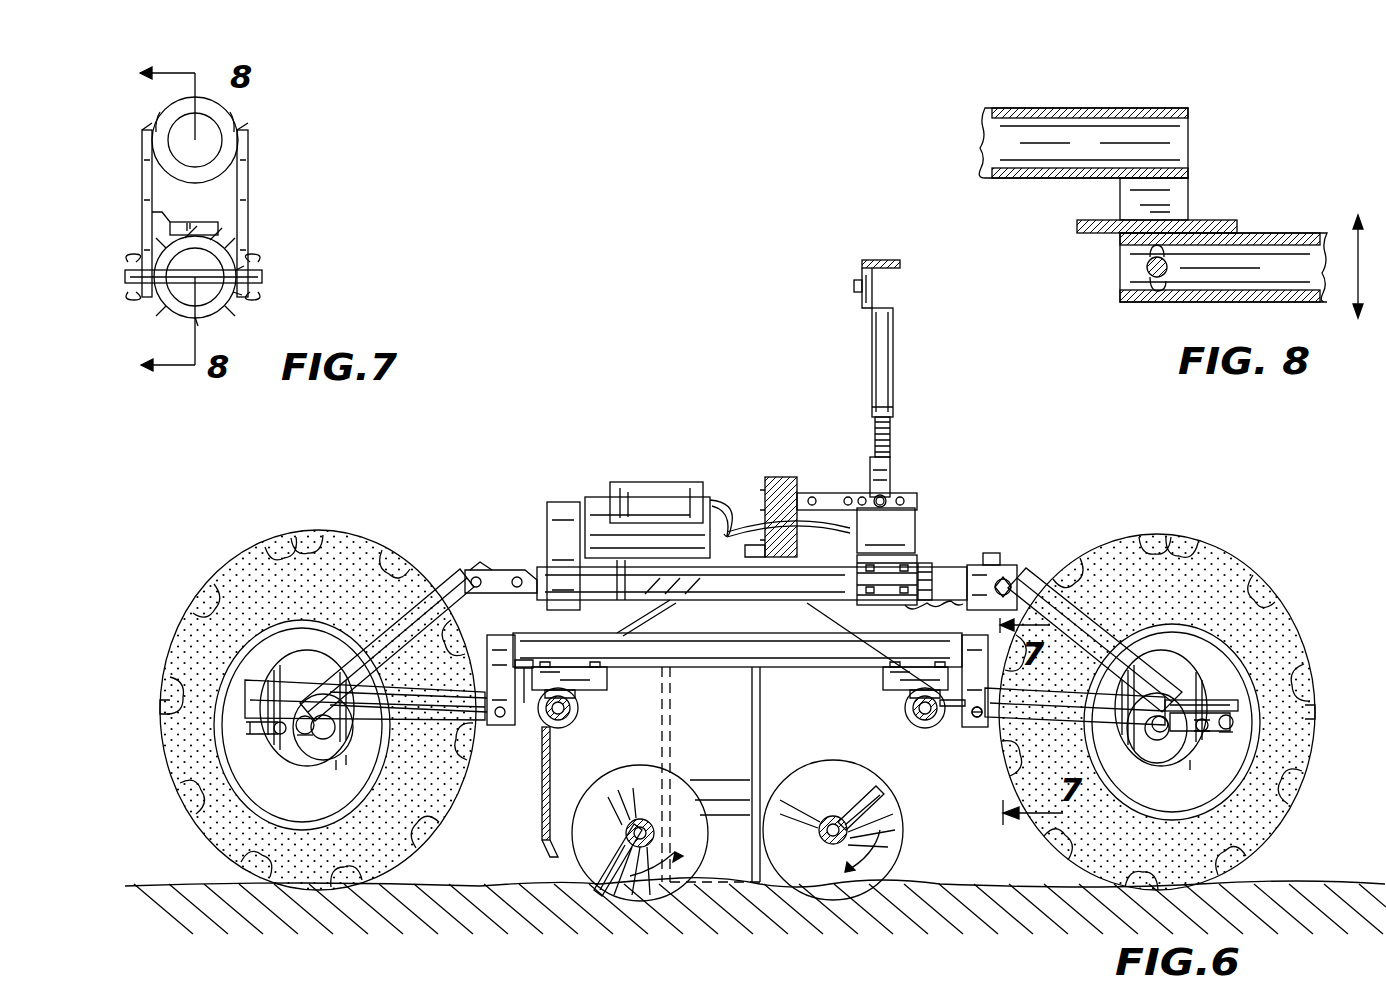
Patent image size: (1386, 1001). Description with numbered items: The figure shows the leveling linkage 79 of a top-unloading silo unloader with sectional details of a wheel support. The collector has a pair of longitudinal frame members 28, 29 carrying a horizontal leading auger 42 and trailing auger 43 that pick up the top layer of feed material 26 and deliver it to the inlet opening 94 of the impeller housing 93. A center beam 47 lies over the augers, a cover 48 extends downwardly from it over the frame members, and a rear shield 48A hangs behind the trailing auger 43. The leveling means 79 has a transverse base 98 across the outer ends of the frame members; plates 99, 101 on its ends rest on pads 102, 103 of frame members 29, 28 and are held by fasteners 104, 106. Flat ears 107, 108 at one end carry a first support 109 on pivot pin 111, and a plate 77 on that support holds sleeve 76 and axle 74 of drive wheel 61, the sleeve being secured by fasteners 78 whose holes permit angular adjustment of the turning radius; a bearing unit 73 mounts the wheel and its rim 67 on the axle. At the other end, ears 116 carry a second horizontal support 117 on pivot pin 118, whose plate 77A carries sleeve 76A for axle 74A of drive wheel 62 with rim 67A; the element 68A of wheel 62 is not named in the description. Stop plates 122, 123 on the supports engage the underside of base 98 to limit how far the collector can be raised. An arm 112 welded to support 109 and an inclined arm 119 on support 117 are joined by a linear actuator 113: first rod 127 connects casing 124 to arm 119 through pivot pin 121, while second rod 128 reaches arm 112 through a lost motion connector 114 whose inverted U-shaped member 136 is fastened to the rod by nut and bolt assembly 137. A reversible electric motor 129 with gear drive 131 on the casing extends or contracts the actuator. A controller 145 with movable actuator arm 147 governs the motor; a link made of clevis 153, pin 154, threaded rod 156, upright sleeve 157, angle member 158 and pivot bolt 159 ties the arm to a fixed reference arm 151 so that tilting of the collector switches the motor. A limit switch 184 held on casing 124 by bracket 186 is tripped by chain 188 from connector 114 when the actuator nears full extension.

In FIG. 6, the feed material 26 is at (1005, 872).
In FIG. 6, the longitudinal frame member 28 is at (910, 728).
In FIG. 6, the longitudinal frame member 29 is at (580, 718).
In FIG. 6, the leading auger 42 is at (829, 780).
In FIG. 6, the trailing auger 43 is at (638, 780).
In FIG. 6, the center beam 47 is at (745, 538).
In FIG. 6, the cover 48 is at (654, 612).
In FIG. 6, the rear shield 48A is at (542, 822).
In FIG. 6, the drive wheel 61 is at (1299, 586).
In FIG. 6, the drive wheel 62 is at (313, 679).
In FIG. 6, the rim 67 is at (1215, 735).
In FIG. 6, the rim 67A is at (285, 770).
In FIG. 6, the tire 68A is at (216, 596).
In FIG. 6, the bearing unit 73 is at (1165, 730).
In FIG. 6, the axle 74 is at (1210, 726).
In FIG. 6, the axle 74A is at (275, 730).
In FIG. 6, the sleeve 76 is at (1218, 735).
In FIG. 6, the sleeve 76A is at (295, 750).
In FIG. 6, the plate 77 is at (1234, 705).
In FIG. 6, the plate 77A is at (250, 692).
In FIG. 6, the fasteners 78 is at (1175, 705).
In FIG. 6, the leveling means 79 is at (583, 482).
In FIG. 6, the housing 93 is at (760, 707).
In FIG. 6, the inlet opening 94 is at (711, 774).
In FIG. 7, the transverse base 98 is at (162, 114).
In FIG. 8, the transverse base 98 is at (1083, 160).
In FIG. 6, the transverse base 98 is at (737, 650).
In FIG. 6, the plate 99 is at (607, 676).
In FIG. 6, the plate 101 is at (890, 672).
In FIG. 6, the pad 102 is at (597, 690).
In FIG. 6, the pad 103 is at (910, 692).
In FIG. 6, the fastener 104 is at (575, 668).
In FIG. 6, the fastener 106 is at (887, 656).
In FIG. 7, the ear 107 is at (142, 184).
In FIG. 8, the ear 107 is at (1182, 192).
In FIG. 6, the ear 107 is at (960, 648).
In FIG. 7, the ear 108 is at (248, 197).
In FIG. 7, the first support 109 is at (171, 313).
In FIG. 8, the first support 109 is at (1280, 302).
In FIG. 6, the first support 109 is at (1070, 720).
In FIG. 7, the pivot pin 111 is at (262, 274).
In FIG. 8, the pivot pin 111 is at (1146, 270).
In FIG. 6, the pivot pin 111 is at (980, 720).
In FIG. 6, the arm 112 is at (1082, 616).
In FIG. 6, the linear actuator 113 is at (752, 583).
In FIG. 6, the lost motion connector 114 is at (1016, 572).
In FIG. 6, the ears 116 is at (474, 588).
In FIG. 6, the second support 117 is at (418, 717).
In FIG. 6, the pivot pin 118 is at (500, 717).
In FIG. 6, the arm 119 is at (380, 618).
In FIG. 6, the pivot pin 121 is at (470, 565).
In FIG. 7, the stop plate 122 is at (165, 211).
In FIG. 8, the stop plate 122 is at (1092, 236).
In FIG. 6, the stop plate 122 is at (950, 715).
In FIG. 6, the stop plate 123 is at (525, 700).
In FIG. 6, the casing 124 is at (815, 570).
In FIG. 6, the first rod 127 is at (517, 574).
In FIG. 6, the second rod 128 is at (940, 570).
In FIG. 6, the reversible electric motor 129 is at (678, 470).
In FIG. 6, the gear drive 131 is at (563, 496).
In FIG. 6, the U-shaped member 136 is at (990, 614).
In FIG. 6, the nut and bolt assembly 137 is at (990, 553).
In FIG. 6, the controller 145 is at (790, 476).
In FIG. 6, the actuator arm 147 is at (914, 499).
In FIG. 6, the reference arm 151 is at (882, 260).
In FIG. 6, the clevis 153 is at (890, 474).
In FIG. 6, the pin 154 is at (869, 496).
In FIG. 6, the threaded rod 156 is at (890, 436).
In FIG. 6, the sleeve 157 is at (885, 360).
In FIG. 6, the angle member 158 is at (890, 304).
In FIG. 6, the pivot bolt 159 is at (854, 285).
In FIG. 6, the limit switch 184 is at (886, 530).
In FIG. 6, the bracket 186 is at (855, 582).
In FIG. 6, the chain 188 is at (903, 614).